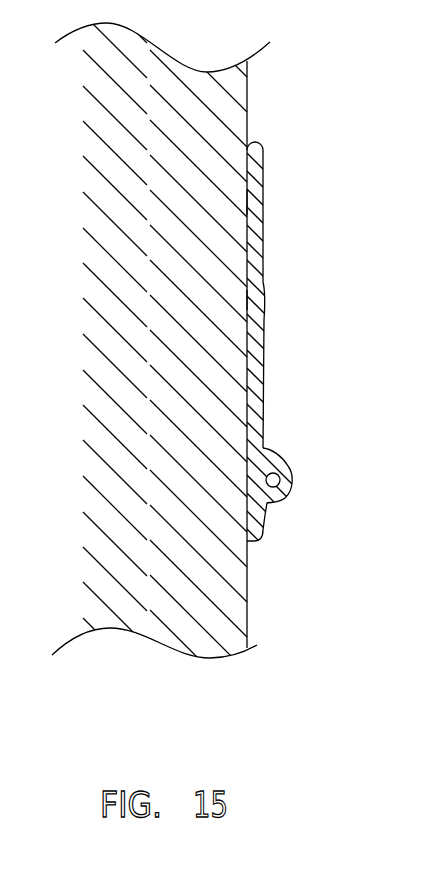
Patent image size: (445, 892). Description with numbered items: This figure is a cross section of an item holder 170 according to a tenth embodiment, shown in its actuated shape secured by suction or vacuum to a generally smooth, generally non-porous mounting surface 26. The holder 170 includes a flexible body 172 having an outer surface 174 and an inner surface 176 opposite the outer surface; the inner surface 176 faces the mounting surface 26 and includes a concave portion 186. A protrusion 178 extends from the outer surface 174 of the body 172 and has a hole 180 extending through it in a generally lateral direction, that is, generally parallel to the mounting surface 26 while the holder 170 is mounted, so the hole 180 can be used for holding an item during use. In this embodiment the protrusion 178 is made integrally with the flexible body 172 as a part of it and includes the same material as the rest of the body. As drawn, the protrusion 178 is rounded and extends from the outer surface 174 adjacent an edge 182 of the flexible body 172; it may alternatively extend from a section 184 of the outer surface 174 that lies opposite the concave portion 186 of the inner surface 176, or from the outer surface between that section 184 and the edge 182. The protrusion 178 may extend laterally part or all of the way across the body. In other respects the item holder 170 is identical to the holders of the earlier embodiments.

The mounting surface 26 is at (260, 605).
The item holder 170 is at (290, 178).
The flexible body 172 is at (263, 204).
The outer surface 174 is at (267, 325).
The inner surface 176 is at (245, 203).
The protrusion 178 is at (283, 497).
The hole 180 is at (283, 463).
The edge 182 is at (260, 540).
The section 184 is at (275, 283).
The concave portion 186 is at (247, 300).